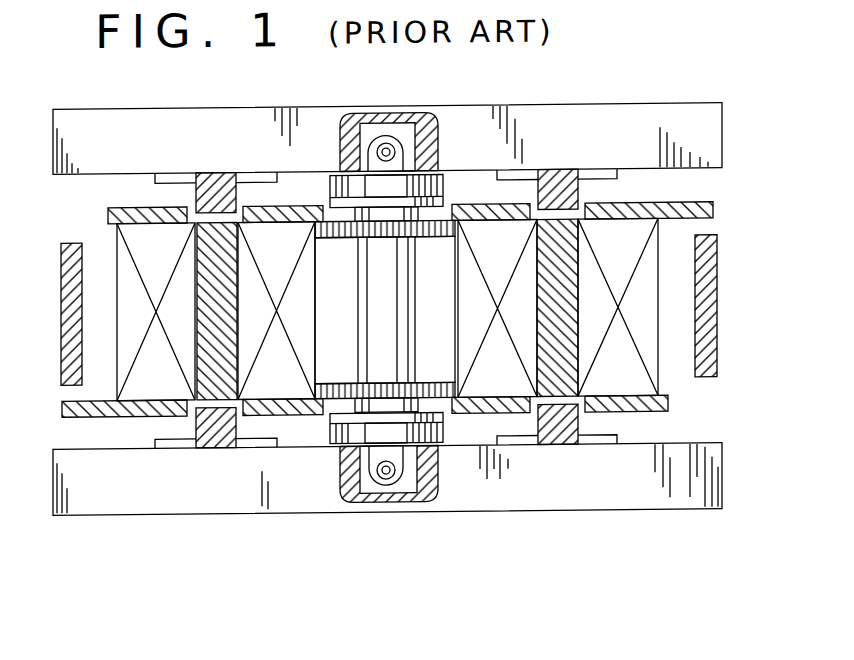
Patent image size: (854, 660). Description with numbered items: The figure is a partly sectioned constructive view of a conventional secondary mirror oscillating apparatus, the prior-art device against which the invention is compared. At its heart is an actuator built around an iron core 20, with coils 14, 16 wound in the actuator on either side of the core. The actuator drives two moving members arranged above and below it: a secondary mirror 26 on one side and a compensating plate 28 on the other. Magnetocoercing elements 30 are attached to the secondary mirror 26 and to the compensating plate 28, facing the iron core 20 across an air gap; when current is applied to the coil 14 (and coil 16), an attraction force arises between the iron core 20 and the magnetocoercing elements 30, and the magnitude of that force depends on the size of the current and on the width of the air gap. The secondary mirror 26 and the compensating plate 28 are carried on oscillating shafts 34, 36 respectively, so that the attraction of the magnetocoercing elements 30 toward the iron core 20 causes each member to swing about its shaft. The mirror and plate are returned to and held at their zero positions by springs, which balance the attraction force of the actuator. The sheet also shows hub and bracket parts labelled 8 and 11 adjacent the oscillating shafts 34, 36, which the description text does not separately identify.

The upper bearing bracket 8 is at (442, 199).
The lower bearing bracket 11 is at (333, 432).
The coil 14 is at (663, 381).
The coil 16 is at (117, 385).
The iron core 20 is at (203, 264).
The secondary mirror 26 is at (658, 117).
The compensating plate 28 is at (677, 513).
The magnetocoercing element 30 is at (196, 194).
The oscillating shaft 34 is at (387, 143).
The oscillating shaft 36 is at (388, 479).